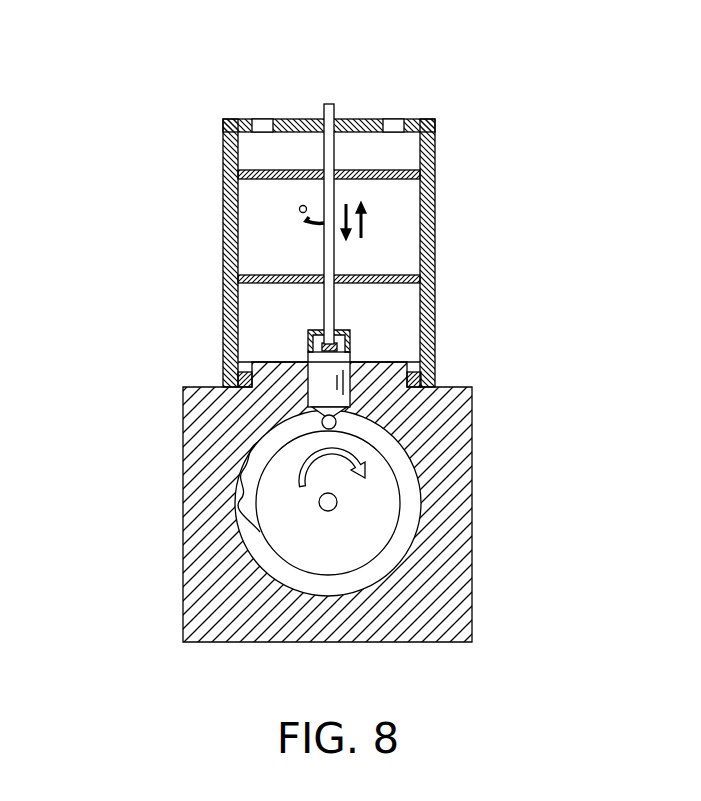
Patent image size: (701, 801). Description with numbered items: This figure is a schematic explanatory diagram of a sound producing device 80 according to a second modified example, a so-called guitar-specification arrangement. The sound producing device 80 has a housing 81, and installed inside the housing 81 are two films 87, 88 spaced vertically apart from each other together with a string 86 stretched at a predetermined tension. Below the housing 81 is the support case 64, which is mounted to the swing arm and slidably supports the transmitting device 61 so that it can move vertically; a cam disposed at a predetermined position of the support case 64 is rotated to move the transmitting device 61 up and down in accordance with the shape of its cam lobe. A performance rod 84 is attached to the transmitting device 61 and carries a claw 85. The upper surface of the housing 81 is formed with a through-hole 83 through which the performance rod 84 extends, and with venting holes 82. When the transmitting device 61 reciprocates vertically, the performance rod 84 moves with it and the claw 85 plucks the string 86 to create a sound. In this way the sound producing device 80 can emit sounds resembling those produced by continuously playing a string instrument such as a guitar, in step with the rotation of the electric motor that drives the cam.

The sound producing device 80 is at (315, 194).
The housing 81 is at (222, 142).
The venting holes 82 is at (262, 128).
The through-hole 83 is at (336, 118).
The performance rod 84 is at (335, 301).
The claw 85 is at (299, 209).
The string 86 is at (312, 221).
The film 87 is at (393, 171).
The film 88 is at (393, 279).
The transmitting device 61 is at (308, 394).
The support case 64 is at (183, 493).